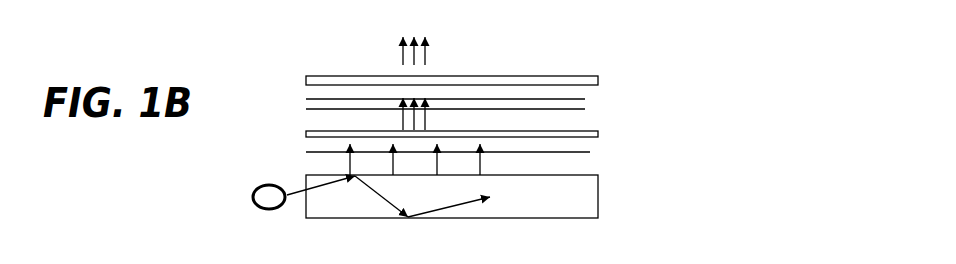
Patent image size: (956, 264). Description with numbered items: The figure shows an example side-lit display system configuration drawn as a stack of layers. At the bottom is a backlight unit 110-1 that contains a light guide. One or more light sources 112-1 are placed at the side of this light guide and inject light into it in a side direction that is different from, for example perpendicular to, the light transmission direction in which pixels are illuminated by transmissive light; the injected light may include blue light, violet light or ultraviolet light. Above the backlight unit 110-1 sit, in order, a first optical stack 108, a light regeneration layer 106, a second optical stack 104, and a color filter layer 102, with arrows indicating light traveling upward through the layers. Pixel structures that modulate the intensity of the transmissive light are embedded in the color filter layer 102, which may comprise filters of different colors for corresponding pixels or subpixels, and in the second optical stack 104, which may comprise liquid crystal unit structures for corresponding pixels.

The color filter layer 102 is at (520, 83).
The second optical stack 104 is at (587, 101).
The light regeneration layer 106 is at (598, 132).
The first optical stack 108 is at (590, 152).
The backlight unit 110-1 is at (598, 195).
The light source 112-1 is at (273, 185).